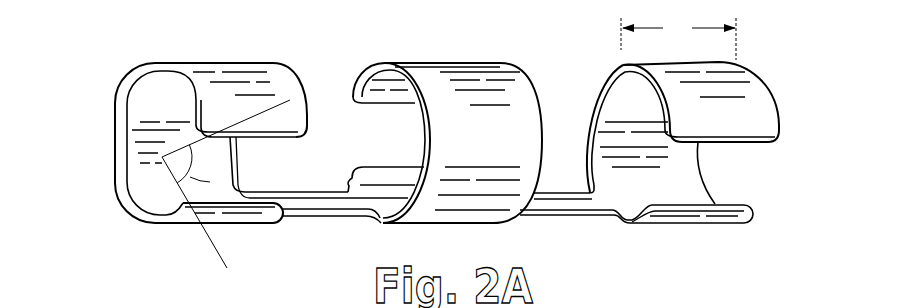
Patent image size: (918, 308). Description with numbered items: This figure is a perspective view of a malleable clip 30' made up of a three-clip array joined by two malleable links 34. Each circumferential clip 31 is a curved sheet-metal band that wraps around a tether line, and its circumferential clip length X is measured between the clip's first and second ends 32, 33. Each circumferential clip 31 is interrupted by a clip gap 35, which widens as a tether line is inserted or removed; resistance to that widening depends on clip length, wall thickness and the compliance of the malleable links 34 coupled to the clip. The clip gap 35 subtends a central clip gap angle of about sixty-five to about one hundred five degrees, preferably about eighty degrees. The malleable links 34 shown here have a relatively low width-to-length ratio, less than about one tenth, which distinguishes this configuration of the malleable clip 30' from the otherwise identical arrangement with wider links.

The malleable clip 30' is at (420, 146).
The circumferential clip 31 is at (201, 55).
The first end of circumferential clip 32 is at (771, 95).
The second end of circumferential clip 33 is at (594, 88).
The malleable link 34 is at (317, 190).
The circumferential clip gap 35 is at (788, 145).